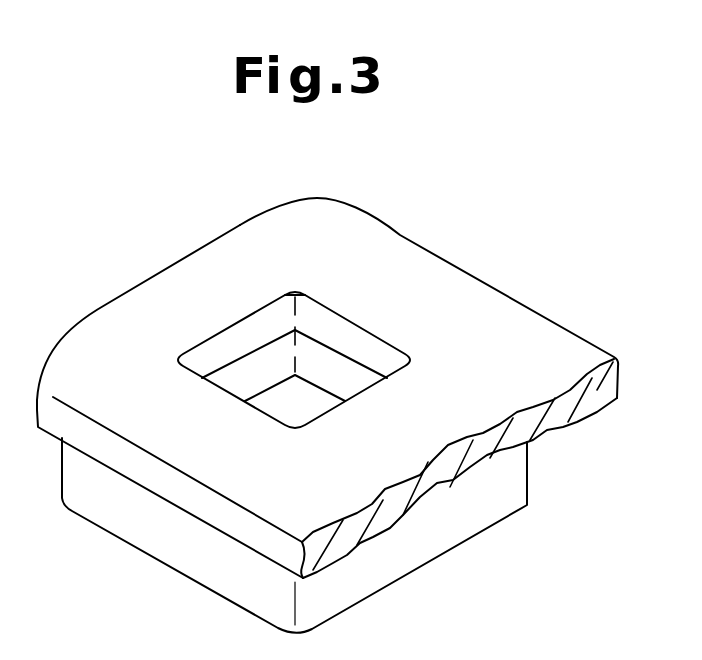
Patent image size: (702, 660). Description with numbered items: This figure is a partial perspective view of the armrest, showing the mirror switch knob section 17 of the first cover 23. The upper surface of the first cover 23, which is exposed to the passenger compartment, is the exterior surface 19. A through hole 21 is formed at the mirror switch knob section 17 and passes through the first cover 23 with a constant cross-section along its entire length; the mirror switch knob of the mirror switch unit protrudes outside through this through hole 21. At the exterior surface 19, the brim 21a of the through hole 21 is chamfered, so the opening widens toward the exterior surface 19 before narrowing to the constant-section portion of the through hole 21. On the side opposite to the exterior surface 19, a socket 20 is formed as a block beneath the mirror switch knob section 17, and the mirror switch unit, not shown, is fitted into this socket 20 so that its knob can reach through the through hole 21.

The mirror switch knob section 17 is at (308, 281).
The exterior surface 19 is at (150, 292).
The socket 20 is at (423, 557).
The through hole 21 is at (352, 333).
The brim 21a is at (238, 318).
The first cover 23 is at (572, 340).